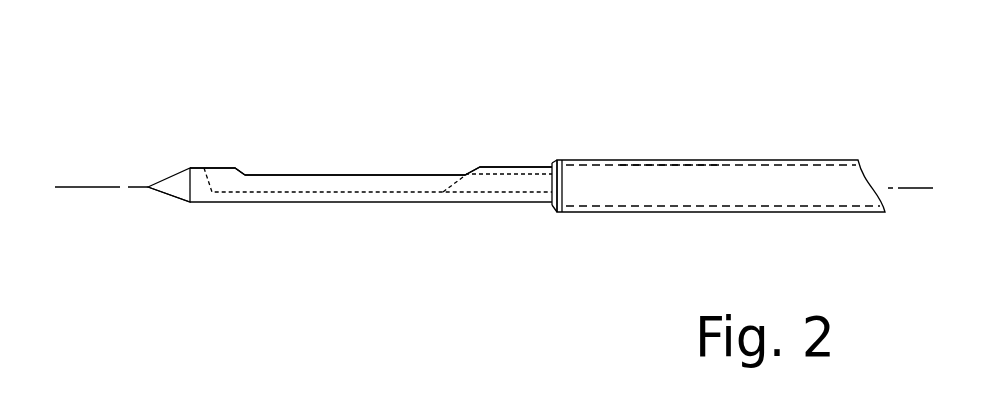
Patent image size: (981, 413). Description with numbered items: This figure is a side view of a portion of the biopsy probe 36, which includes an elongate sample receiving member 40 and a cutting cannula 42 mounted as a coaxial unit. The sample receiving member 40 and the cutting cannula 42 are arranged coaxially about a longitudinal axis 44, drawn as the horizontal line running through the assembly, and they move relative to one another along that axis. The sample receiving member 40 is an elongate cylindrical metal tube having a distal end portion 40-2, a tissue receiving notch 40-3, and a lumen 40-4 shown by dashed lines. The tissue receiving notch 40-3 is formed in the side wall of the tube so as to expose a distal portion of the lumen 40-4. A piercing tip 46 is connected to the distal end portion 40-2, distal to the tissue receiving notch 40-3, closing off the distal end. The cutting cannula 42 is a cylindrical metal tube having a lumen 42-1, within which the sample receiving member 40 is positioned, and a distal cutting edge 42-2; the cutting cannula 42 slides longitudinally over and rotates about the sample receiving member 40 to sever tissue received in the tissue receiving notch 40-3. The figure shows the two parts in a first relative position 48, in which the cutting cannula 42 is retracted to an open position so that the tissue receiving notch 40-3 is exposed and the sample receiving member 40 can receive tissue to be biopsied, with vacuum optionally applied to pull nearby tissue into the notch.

The biopsy probe 36 is at (752, 91).
The sample receiving member 40 is at (347, 202).
The distal end portion 40-2 is at (192, 225).
The tissue receiving notch 40-3 is at (334, 128).
The lumen 40-4 is at (512, 193).
The cutting cannula 42 is at (762, 160).
The lumen 42-1 is at (672, 172).
The distal cutting edge 42-2 is at (553, 206).
The longitudinal axis 44 is at (80, 187).
The piercing tip 46 is at (162, 181).
The first relative position 48 is at (172, 91).